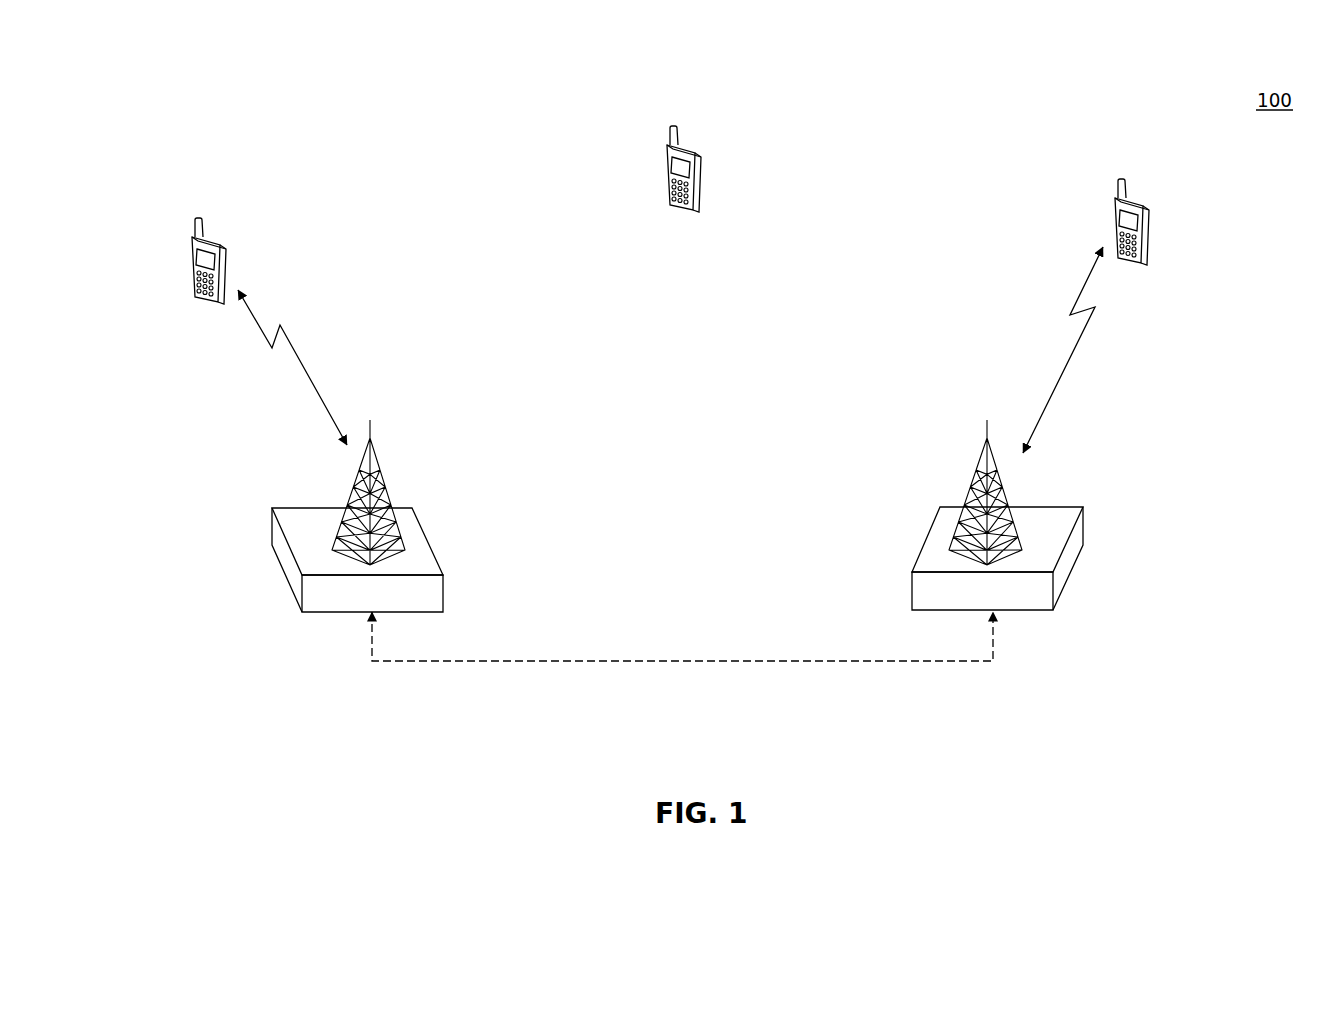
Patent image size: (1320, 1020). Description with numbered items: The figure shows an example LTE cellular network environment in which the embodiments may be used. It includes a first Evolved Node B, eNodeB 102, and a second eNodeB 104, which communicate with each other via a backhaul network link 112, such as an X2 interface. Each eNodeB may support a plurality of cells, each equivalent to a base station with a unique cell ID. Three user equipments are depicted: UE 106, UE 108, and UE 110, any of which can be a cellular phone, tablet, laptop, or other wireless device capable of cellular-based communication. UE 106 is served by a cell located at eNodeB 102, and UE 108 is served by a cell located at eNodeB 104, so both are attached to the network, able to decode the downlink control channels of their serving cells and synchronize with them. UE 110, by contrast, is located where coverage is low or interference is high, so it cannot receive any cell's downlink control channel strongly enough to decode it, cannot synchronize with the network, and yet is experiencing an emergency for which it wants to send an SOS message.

The first Evolved Node B (eNodeB) 102 is at (1076, 567).
The second eNodeB 104 is at (280, 567).
The User Equipment (UE) 106 is at (1148, 260).
The User Equipment (UE) 108 is at (190, 280).
The User Equipment (UE) 110 is at (680, 213).
The backhaul network link 112 is at (698, 662).